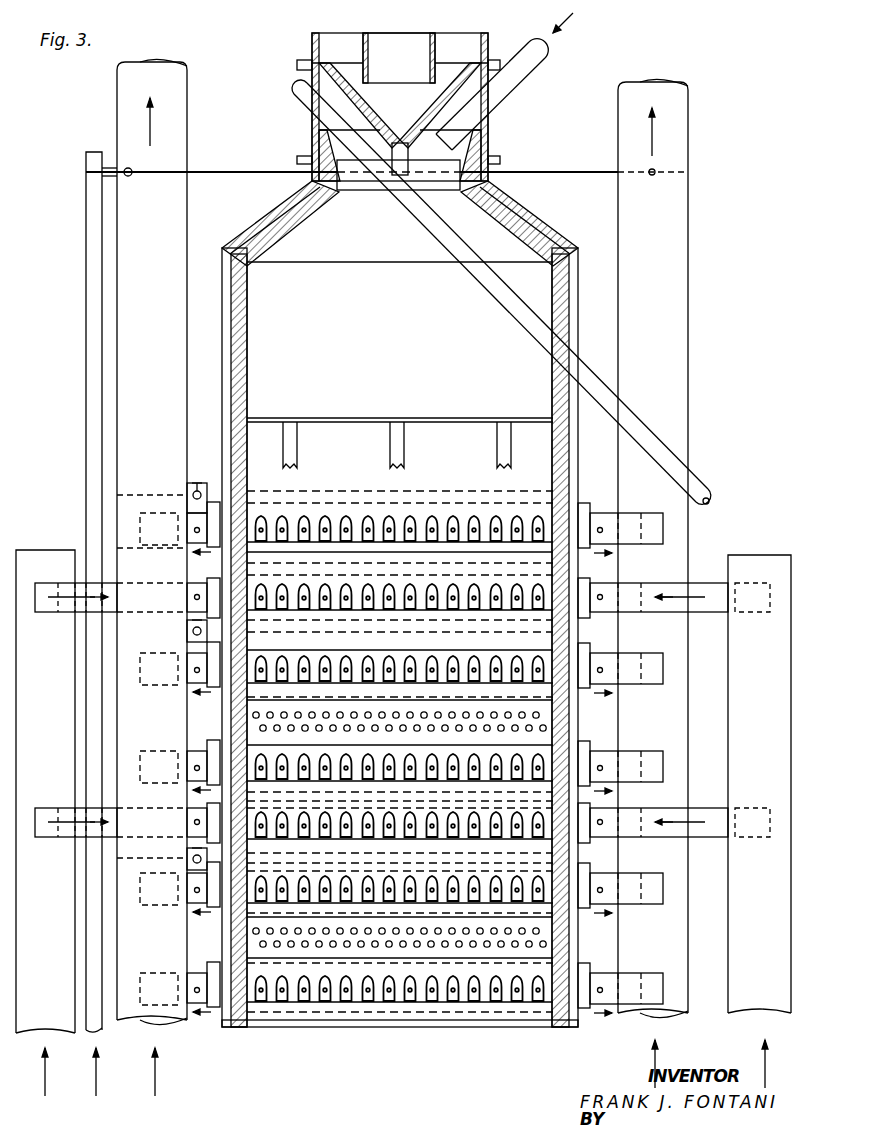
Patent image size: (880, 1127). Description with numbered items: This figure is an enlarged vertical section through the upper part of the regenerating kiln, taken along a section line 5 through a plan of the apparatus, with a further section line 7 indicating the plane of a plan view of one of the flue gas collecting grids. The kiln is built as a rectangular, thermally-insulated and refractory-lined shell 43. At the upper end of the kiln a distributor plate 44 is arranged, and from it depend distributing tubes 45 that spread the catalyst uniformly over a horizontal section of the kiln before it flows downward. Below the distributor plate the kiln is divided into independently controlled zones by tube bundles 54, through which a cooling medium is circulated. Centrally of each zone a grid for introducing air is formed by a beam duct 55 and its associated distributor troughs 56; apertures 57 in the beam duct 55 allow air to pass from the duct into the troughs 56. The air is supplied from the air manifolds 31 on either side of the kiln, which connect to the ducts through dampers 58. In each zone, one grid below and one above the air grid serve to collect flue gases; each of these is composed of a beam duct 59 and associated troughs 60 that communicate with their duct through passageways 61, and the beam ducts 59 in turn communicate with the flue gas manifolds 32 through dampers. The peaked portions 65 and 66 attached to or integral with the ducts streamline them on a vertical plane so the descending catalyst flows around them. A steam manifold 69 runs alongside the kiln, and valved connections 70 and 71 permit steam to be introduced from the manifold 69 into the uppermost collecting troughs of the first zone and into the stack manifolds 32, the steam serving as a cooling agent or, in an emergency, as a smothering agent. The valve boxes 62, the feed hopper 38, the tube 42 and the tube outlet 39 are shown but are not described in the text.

The section line 5- 5 is at (400, 5).
The section line 7- 7 is at (30, 695).
The air manifold 31 is at (42, 553).
The flue gas manifold 32 is at (170, 445).
The feed hopper 38 is at (396, 76).
The poker tube outlet 39 is at (712, 488).
The inlet tube 42 is at (507, 100).
The shell 43 is at (553, 322).
The distributor plate 44 is at (400, 402).
The distributing tubes 45 is at (414, 445).
The tube bundles 54 is at (530, 716).
The beam duct 55 is at (247, 598).
The distributor troughs 56 is at (283, 598).
The apertures 57 is at (388, 598).
The damper 58 is at (194, 598).
The beam duct 59 is at (560, 500).
The troughs 60 is at (335, 518).
The passageways 61 is at (470, 518).
The valve box 62 is at (195, 530).
The peaked portion 65 is at (430, 510).
The peaked portion 66 is at (560, 560).
The steam manifold 69 is at (86, 378).
The valved connection 70 is at (208, 492).
The valved connection 71 is at (228, 172).